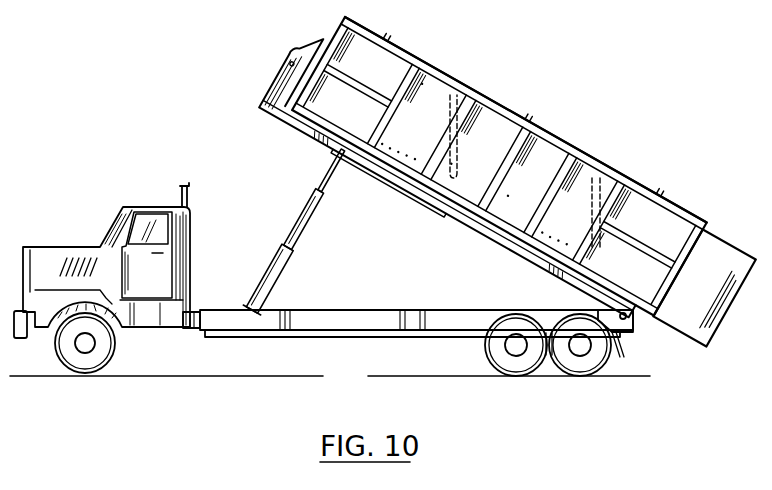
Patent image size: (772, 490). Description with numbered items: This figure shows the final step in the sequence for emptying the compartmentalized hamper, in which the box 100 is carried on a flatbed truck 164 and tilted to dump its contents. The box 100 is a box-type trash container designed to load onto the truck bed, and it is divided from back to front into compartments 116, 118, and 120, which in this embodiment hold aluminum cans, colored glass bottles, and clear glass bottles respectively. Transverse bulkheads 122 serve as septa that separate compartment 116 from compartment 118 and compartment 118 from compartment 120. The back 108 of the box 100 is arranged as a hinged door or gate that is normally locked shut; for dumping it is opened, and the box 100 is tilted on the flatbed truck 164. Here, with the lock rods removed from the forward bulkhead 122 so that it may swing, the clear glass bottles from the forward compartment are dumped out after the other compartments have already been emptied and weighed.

The box 100 is at (659, 164).
The back 108 is at (716, 253).
The compartment 116 is at (613, 186).
The compartment 118 is at (490, 108).
The compartment 120 is at (432, 87).
The transverse bulkhead 122 is at (455, 150).
The flatbed truck 164 is at (376, 316).